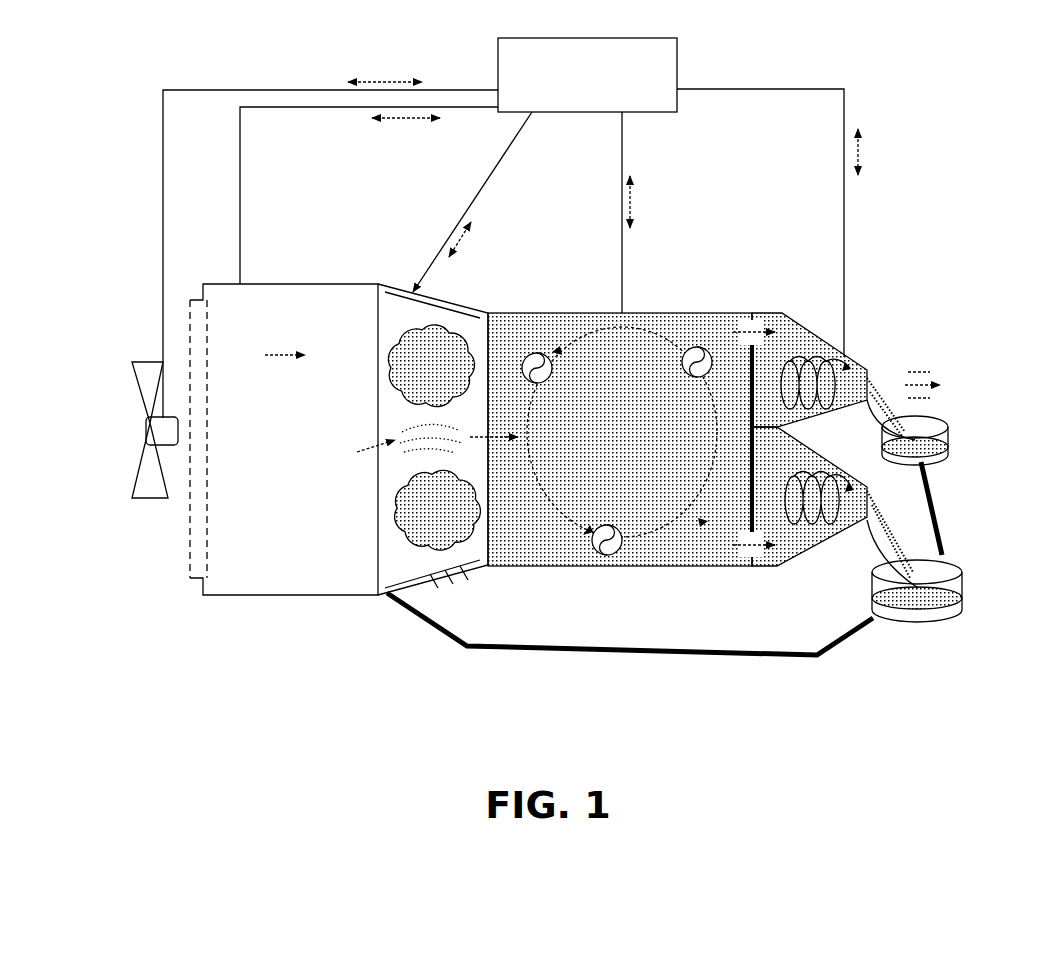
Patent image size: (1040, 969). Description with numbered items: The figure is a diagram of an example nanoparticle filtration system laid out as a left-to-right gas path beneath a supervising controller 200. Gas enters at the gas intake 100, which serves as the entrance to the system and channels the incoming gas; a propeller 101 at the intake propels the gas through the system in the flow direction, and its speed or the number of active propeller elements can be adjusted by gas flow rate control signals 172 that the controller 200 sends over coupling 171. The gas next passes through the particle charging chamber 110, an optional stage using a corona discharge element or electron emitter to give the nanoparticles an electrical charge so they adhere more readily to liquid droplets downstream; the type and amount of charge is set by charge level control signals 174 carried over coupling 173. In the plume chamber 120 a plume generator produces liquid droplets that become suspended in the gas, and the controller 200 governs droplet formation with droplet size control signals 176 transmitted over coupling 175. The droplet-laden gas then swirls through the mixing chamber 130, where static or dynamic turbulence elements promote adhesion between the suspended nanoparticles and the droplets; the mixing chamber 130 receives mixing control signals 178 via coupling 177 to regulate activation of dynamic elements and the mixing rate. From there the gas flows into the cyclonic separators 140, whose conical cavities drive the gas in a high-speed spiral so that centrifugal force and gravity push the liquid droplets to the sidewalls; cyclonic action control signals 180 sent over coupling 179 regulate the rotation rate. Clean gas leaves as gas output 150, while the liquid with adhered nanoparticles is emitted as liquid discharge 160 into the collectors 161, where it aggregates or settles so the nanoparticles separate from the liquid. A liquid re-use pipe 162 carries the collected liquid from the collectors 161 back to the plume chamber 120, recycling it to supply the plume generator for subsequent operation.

The gas intake 100 is at (200, 561).
The propeller 101 is at (128, 473).
The particle charging chamber 110 is at (284, 439).
The plume chamber 120 is at (392, 579).
The mixing chamber 130 is at (620, 439).
The cyclonic separators 140 is at (858, 460).
The gas output 150 is at (966, 376).
The liquid discharge 160 is at (883, 541).
The collectors 161 is at (950, 468).
The liquid re-use pipe 162 is at (664, 587).
The coupling 171 is at (330, 246).
The gas flow rate control signals 172 is at (390, 49).
The coupling 173 is at (369, 195).
The charge level control signals 174 is at (394, 141).
The coupling 175 is at (495, 202).
The droplet size control signals 176 is at (502, 234).
The coupling 177 is at (655, 212).
The mixing control signals 178 is at (682, 210).
The coupling 179 is at (760, 214).
The cyclonic action control signals 180 is at (906, 133).
The controller 200 is at (587, 75).